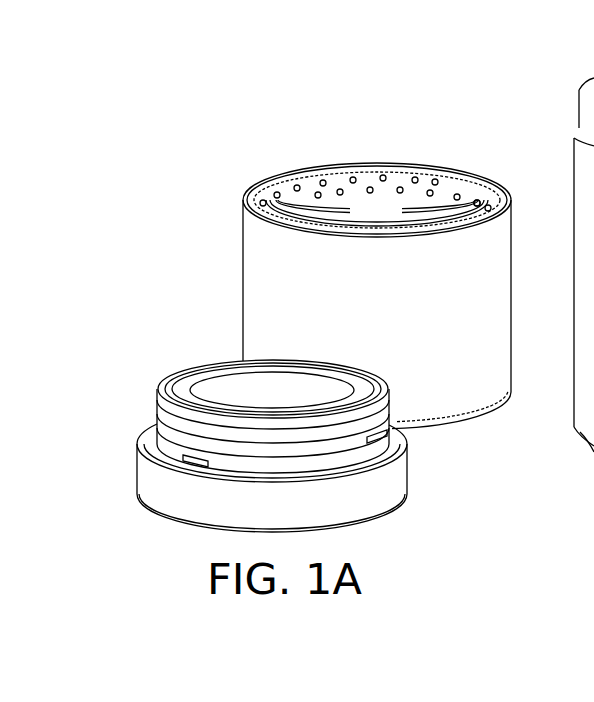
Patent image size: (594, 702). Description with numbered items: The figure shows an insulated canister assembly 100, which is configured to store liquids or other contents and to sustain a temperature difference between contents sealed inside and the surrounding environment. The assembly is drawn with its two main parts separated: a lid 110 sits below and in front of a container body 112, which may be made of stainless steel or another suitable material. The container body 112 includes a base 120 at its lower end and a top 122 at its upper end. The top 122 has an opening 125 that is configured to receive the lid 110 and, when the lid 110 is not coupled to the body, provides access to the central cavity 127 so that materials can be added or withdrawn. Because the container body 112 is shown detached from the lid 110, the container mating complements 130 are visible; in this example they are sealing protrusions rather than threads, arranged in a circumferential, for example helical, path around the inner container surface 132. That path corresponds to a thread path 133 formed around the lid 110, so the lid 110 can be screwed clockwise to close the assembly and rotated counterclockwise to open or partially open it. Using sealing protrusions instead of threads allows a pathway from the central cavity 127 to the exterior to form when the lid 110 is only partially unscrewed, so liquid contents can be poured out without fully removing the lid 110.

The insulated canister assembly 100 is at (331, 312).
The lid 110 is at (408, 485).
The container body 112 is at (512, 275).
The base 120 is at (442, 435).
The top 122 is at (250, 207).
The opening 125 is at (290, 205).
The central cavity 127 is at (392, 223).
The container mating complements 130 is at (433, 172).
The inner container surface 132 is at (477, 197).
The thread path 133 is at (145, 432).